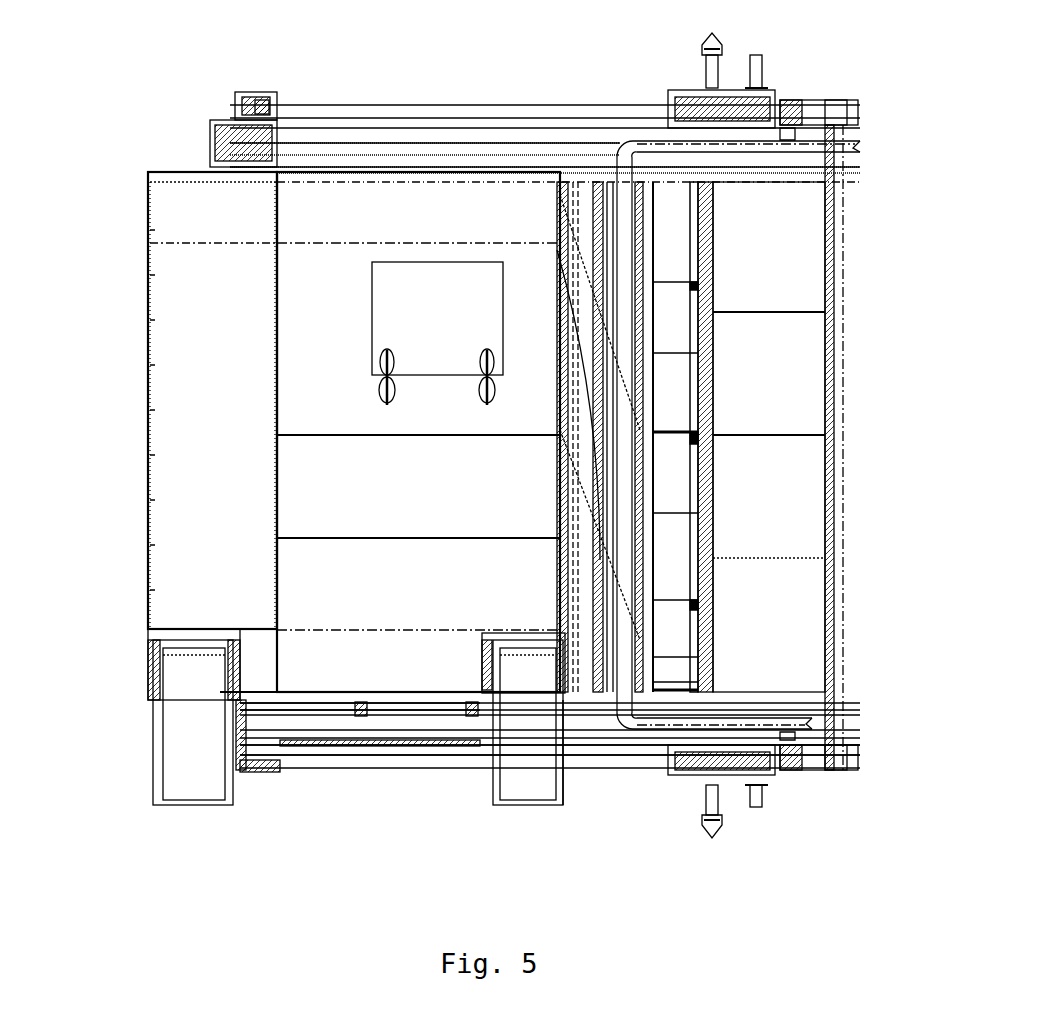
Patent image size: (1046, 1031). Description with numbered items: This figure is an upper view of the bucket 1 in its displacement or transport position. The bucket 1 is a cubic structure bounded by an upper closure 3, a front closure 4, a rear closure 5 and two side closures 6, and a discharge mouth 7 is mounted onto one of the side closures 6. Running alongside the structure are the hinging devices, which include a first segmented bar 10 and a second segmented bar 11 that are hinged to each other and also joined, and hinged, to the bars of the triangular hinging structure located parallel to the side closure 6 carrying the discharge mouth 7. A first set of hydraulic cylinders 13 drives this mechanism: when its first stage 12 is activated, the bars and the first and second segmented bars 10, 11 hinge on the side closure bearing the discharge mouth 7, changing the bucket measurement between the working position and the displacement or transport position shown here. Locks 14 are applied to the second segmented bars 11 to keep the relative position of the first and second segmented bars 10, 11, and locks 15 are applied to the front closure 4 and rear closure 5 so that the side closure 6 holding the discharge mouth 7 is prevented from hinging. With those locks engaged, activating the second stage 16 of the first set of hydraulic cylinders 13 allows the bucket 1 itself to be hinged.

The bucket 1 is at (192, 80).
The upper closure 3 is at (347, 227).
The front closure 4 is at (170, 173).
The rear closure 5 is at (150, 707).
The side closure 6 is at (137, 413).
The discharge mouth 7 is at (800, 497).
The first segmented bar 10 is at (605, 760).
The second segmented bar 11 is at (790, 757).
The first stage 12 is at (318, 740).
The first set of hydraulic cylinders 13 is at (390, 740).
The locks 14 is at (715, 843).
The locks 15 is at (760, 815).
The second stage 16 is at (437, 742).